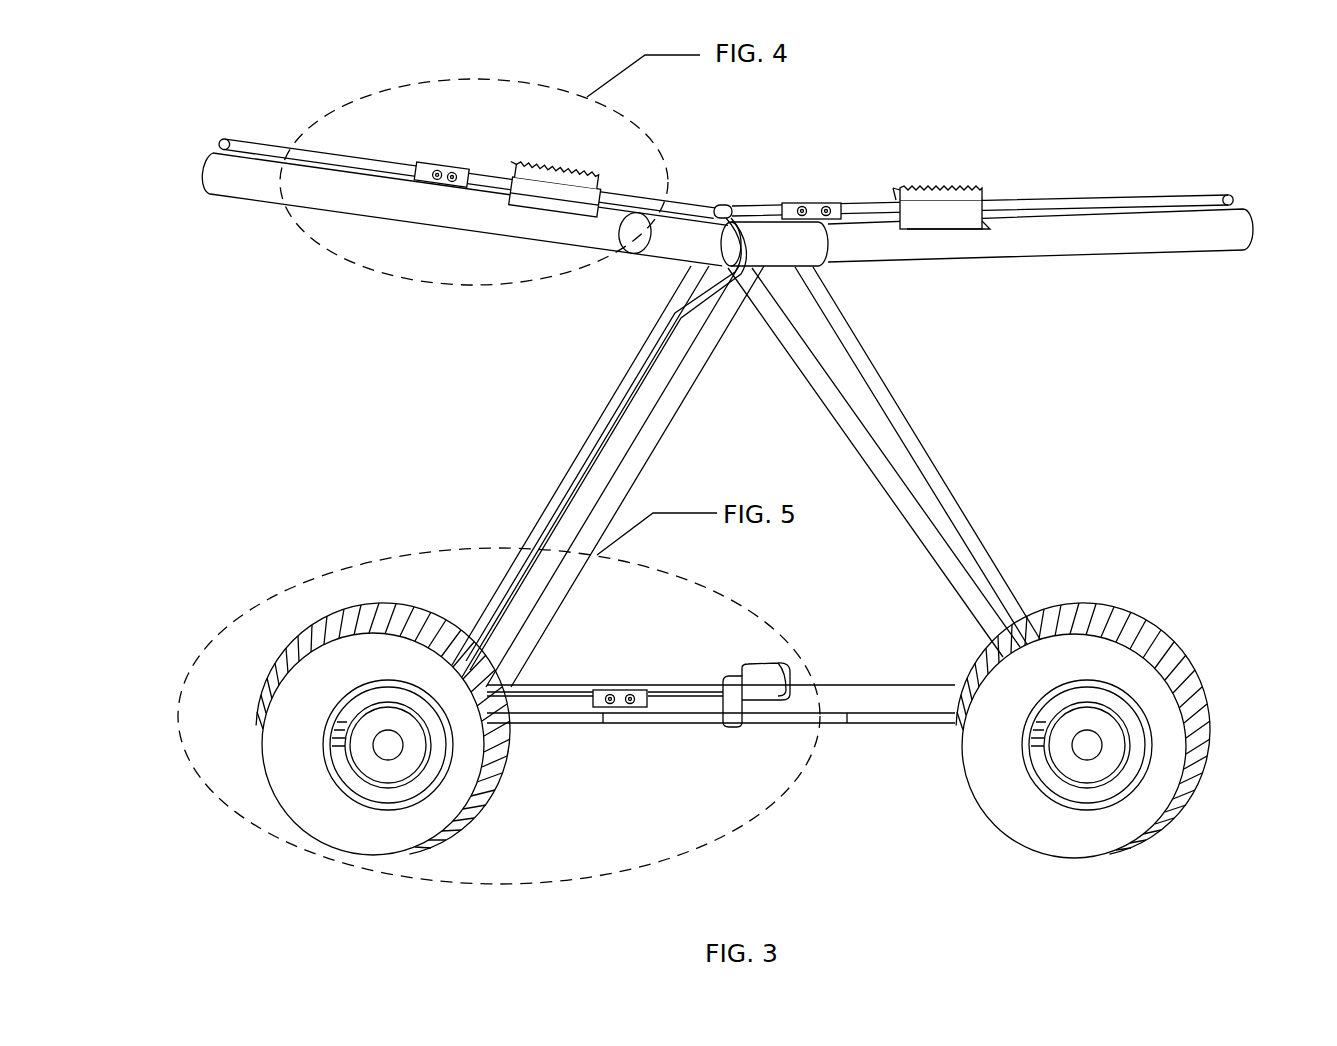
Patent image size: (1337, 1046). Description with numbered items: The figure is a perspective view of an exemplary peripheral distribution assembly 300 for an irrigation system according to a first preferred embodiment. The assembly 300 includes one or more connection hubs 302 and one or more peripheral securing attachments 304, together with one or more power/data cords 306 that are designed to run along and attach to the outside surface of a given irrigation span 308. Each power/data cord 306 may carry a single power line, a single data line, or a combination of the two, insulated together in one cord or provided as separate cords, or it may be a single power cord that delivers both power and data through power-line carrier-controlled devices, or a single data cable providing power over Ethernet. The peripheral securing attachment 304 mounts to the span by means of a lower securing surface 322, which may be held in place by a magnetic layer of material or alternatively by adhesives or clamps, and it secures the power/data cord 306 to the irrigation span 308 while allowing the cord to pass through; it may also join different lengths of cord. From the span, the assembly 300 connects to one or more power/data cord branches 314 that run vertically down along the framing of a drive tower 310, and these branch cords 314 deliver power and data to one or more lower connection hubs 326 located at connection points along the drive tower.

The peripheral distribution assembly 300 is at (958, 88).
The connection hub 302 is at (830, 202).
The peripheral securing attachment 304 is at (947, 188).
The power/data cord 306 is at (1010, 204).
The irrigation span 308 is at (1123, 240).
The drive tower 310 is at (863, 410).
The power/data cord branch 314 is at (627, 400).
The lower securing surface 322 is at (721, 804).
The lower connection hub 326 is at (648, 701).